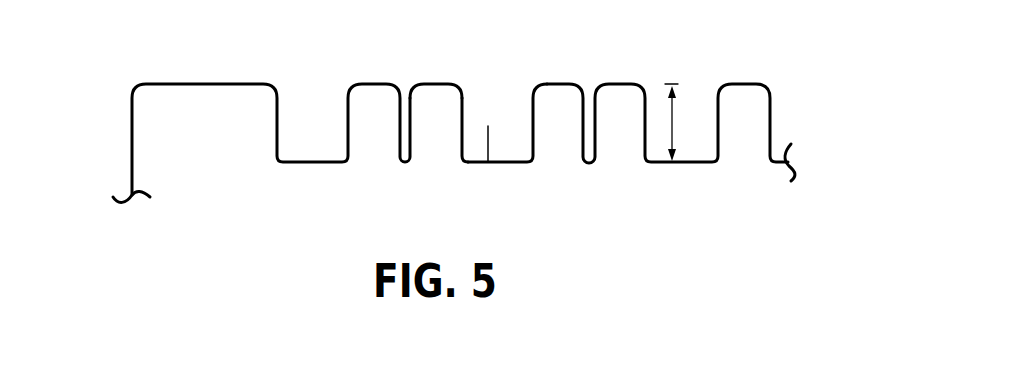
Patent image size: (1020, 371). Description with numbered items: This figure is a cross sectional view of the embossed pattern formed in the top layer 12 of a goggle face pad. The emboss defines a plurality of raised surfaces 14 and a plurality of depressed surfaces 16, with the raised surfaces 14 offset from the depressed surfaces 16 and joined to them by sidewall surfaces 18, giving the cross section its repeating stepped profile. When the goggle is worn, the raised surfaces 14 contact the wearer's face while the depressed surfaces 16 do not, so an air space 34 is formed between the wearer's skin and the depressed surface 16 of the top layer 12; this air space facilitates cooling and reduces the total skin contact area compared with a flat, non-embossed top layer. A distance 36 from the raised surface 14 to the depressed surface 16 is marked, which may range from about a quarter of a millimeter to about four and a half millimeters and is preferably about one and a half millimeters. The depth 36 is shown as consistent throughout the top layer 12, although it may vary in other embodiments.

The top layer 12 is at (500, 108).
The raised surfaces 14 is at (434, 82).
The depressed surfaces 16 is at (488, 127).
The sidewall surfaces 18 is at (462, 113).
The air space 34 is at (502, 123).
The distance 36 is at (673, 120).